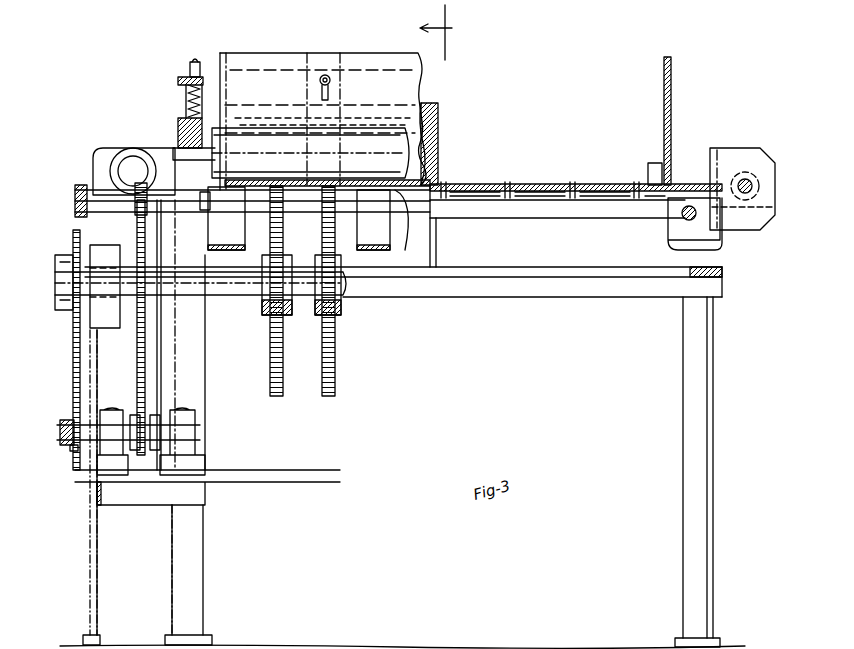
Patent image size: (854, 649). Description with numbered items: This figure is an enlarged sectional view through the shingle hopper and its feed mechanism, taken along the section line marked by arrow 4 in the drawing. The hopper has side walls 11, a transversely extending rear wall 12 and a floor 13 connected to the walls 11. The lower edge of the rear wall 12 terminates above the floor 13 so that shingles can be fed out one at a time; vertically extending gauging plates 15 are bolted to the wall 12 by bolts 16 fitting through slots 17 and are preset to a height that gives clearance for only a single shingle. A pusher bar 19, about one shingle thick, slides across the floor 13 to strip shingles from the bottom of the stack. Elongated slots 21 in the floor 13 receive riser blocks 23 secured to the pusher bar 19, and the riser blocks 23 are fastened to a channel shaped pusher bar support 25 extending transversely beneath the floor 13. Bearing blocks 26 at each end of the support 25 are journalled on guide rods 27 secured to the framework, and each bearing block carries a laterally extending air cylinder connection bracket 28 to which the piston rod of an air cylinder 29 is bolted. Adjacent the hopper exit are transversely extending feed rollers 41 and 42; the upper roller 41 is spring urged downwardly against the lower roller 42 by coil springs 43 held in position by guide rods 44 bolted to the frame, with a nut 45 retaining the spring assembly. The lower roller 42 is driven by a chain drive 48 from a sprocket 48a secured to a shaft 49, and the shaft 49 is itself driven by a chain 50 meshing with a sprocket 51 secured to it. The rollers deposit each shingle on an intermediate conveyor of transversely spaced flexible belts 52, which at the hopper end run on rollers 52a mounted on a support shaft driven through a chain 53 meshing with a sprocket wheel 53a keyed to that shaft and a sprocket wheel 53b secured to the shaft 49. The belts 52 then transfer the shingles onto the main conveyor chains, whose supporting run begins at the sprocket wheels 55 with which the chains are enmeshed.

The section line 4 is at (439, 32).
The side walls 11 is at (219, 70).
The rear wall 12 is at (402, 58).
The floor 13 is at (538, 188).
The gauging plates 15 is at (313, 62).
The bolts 16 is at (330, 78).
The slots 17 is at (330, 95).
The pusher bar 19 is at (466, 185).
The elongated slots 21 is at (435, 182).
The riser blocks 23 is at (553, 196).
The pusher bar support 25 is at (439, 202).
The bearing blocks 26 is at (710, 250).
The guide rod 27 is at (696, 218).
The air cylinder connection bracket 28 is at (762, 200).
The air cylinders 29 is at (112, 160).
The feed roller 41 is at (183, 142).
The feed roller 42 is at (318, 240).
The coil springs 43 is at (185, 92).
The guide rods 44 is at (190, 62).
The nut 45 is at (185, 70).
The chain drive 48 is at (162, 345).
The sprocket 48a is at (155, 452).
The shaft 49 is at (60, 428).
The chain 50 is at (73, 355).
The sprocket 51 is at (72, 450).
The flexible belts 52 is at (225, 252).
The rollers 52a is at (205, 195).
The chain 53 is at (142, 384).
The sprocket wheel 53a is at (125, 173).
The sprocket wheel 53b is at (136, 452).
The sprocket wheels 55 is at (336, 358).